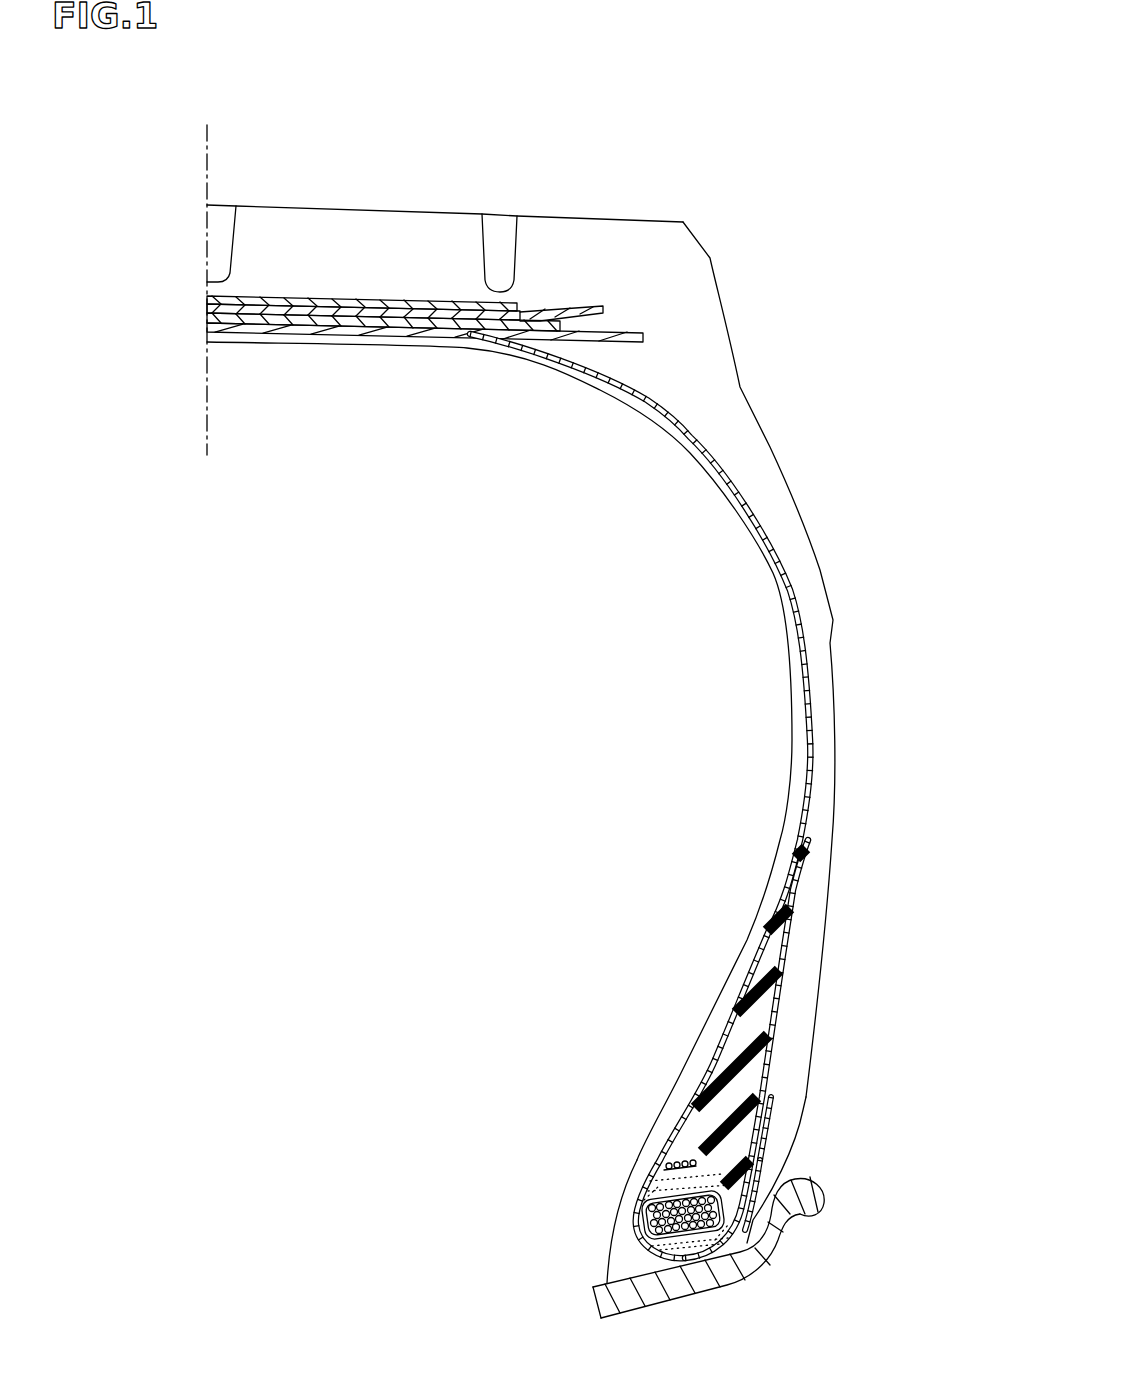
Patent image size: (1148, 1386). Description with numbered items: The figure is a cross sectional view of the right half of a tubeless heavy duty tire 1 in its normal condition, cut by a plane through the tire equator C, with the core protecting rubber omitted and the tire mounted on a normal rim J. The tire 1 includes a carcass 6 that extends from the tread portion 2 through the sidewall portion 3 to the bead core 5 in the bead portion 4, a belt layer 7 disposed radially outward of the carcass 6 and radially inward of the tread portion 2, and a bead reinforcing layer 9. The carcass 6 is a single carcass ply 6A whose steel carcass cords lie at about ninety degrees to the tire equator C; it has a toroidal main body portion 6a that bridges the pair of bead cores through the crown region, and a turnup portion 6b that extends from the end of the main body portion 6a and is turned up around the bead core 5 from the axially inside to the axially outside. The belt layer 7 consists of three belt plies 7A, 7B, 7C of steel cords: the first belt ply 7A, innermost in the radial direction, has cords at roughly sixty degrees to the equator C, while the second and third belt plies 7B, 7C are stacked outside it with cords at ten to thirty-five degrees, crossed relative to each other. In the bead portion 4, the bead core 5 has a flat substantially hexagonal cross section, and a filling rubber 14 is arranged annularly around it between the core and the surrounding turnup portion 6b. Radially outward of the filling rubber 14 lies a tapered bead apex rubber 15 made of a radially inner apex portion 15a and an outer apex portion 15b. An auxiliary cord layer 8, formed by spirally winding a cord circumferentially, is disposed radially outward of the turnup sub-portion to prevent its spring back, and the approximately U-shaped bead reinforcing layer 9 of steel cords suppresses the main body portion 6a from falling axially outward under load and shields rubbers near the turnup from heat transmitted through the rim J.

The heavy duty tire 1 is at (569, 680).
The tread portion 2 is at (406, 186).
The sidewall portion 3 is at (850, 672).
The bead portion 4 is at (786, 1219).
The bead core 5 is at (655, 1207).
The carcass 6 is at (628, 796).
The carcass ply 6A is at (628, 796).
The main body portion 6a is at (727, 1027).
The turnup portion 6b is at (684, 1105).
The belt layer 7 is at (364, 313).
The first belt ply 7A is at (210, 322).
The second belt ply 7B is at (210, 311).
The third belt ply 7C is at (210, 299).
The auxiliary cord layer 8 is at (672, 1148).
The bead reinforcing layer 9 is at (636, 1159).
The filling rubber 14 is at (762, 1165).
The bead apex rubber 15 is at (823, 1017).
The inner apex portion 15a is at (763, 1147).
The outer apex portion 15b is at (760, 1070).
The tire equator C is at (205, 277).
The normal rim J is at (780, 1285).